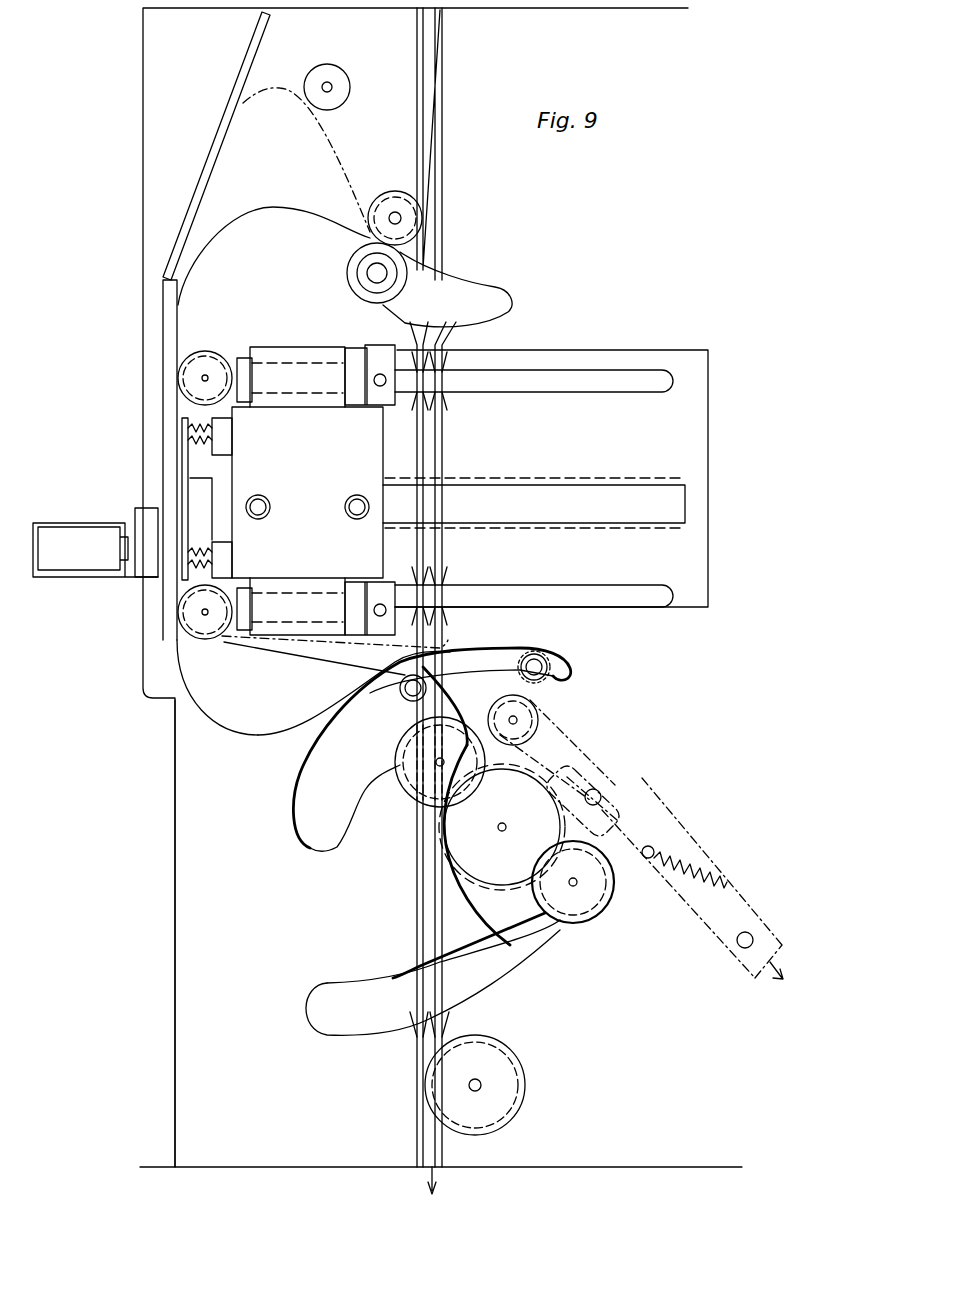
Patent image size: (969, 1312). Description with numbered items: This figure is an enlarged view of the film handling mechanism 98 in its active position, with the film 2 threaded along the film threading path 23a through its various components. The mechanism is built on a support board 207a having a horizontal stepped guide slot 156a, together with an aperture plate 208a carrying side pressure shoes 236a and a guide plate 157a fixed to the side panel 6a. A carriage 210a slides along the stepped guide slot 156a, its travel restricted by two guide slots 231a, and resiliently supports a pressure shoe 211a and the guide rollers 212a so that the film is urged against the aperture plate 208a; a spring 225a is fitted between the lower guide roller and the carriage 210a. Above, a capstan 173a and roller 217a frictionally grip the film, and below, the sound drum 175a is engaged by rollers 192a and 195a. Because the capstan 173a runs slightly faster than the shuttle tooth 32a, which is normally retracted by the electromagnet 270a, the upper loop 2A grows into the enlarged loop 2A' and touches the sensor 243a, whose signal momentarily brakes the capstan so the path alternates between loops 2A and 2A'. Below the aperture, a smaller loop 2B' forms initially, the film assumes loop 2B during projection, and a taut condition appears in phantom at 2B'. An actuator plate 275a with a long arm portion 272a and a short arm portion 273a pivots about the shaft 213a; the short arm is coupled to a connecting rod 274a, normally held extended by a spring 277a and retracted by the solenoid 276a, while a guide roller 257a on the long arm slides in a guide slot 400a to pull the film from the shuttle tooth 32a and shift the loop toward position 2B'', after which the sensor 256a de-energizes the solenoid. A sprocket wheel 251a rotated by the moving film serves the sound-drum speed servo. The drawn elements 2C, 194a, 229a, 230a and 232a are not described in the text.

The film 2 is at (490, 1012).
The upper loop 2A is at (274, 256).
The enlarged loop 2A' is at (306, 160).
The lower loop 2B is at (340, 711).
The smaller loop / taut film condition 2B' is at (335, 669).
The shifted film loop position 2B'' is at (431, 729).
The web path 2C is at (200, 704).
The side panel 6a is at (176, 998).
The film threading path 23a is at (446, 63).
The shuttle tooth 32a is at (135, 512).
The film handling mechanism 98 is at (651, 283).
The stepped guide slot 156a is at (527, 490).
The guide plate 157a is at (195, 197).
The capstan 173a is at (392, 191).
The sound drum 175a is at (460, 845).
The roller 192a is at (603, 897).
The arm 194a is at (393, 980).
The roller 195a is at (412, 773).
The support board 207a is at (706, 550).
The aperture plate 208a is at (163, 283).
The carriage 210a is at (337, 485).
The pressure shoe 211a is at (218, 509).
The guide roller 212a is at (205, 350).
The shaft 213a is at (502, 833).
The roller 217a is at (347, 272).
The spring 225a is at (252, 400).
The bracket 229a is at (372, 343).
The arm 230a is at (508, 292).
The guide slots 231a is at (606, 393).
The arm 232a is at (340, 833).
The side pressure shoes 236a is at (182, 428).
The sensor 243a is at (350, 72).
The sprocket wheel 251a is at (523, 1105).
The sensor 256a is at (550, 710).
The guide roller 257a is at (400, 692).
The electromagnet 270a is at (70, 570).
The long arm portion 272a is at (368, 726).
The short arm portion 273a is at (582, 753).
The connecting rod 274a is at (640, 810).
The actuator plate 275a is at (472, 888).
The solenoid 276a is at (775, 995).
The spring 277a is at (678, 851).
The guide slot 400a is at (570, 678).